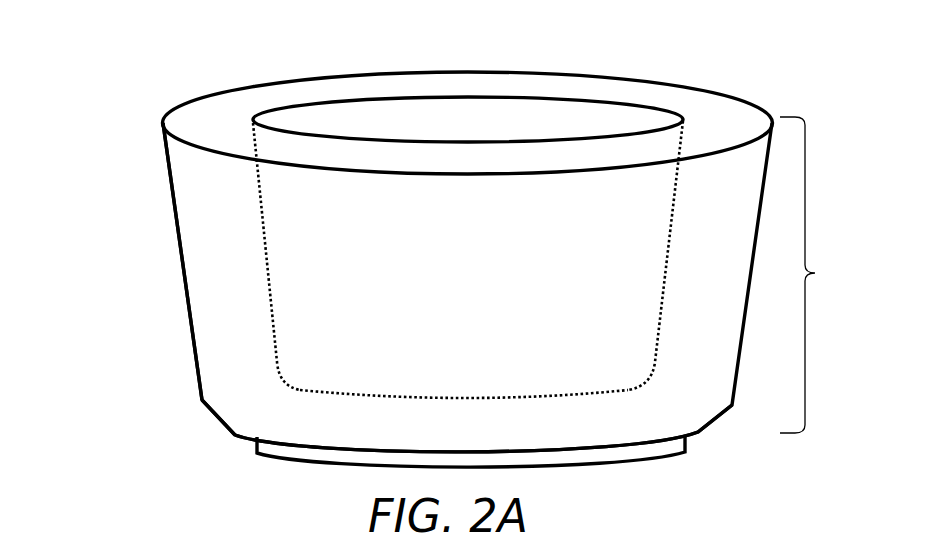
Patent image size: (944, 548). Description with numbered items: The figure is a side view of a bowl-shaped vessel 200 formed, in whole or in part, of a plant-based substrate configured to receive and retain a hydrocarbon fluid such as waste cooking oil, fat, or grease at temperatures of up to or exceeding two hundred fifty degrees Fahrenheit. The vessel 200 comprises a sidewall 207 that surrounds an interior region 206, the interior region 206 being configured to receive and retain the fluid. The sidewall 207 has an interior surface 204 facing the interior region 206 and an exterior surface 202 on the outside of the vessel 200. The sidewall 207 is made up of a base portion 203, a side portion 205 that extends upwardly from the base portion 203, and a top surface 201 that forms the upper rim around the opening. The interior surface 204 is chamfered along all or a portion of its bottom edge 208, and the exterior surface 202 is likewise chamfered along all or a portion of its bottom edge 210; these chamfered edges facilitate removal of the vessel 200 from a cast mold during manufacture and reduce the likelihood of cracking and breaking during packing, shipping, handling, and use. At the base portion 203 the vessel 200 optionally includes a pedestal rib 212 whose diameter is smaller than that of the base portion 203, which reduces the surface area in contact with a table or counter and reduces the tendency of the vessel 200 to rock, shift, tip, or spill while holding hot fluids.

The vessel 200 is at (108, 161).
The top surface 201 is at (218, 110).
The exterior surface 202 is at (180, 250).
The base portion 203 is at (370, 417).
The interior surface 204 is at (276, 331).
The side portion 205 is at (230, 317).
The interior region 206 is at (478, 113).
The sidewall 207 is at (815, 273).
The bottom edge of interior surface 208 is at (290, 378).
The bottom edge of exterior surface 210 is at (227, 428).
The pedestal rib 212 is at (680, 452).